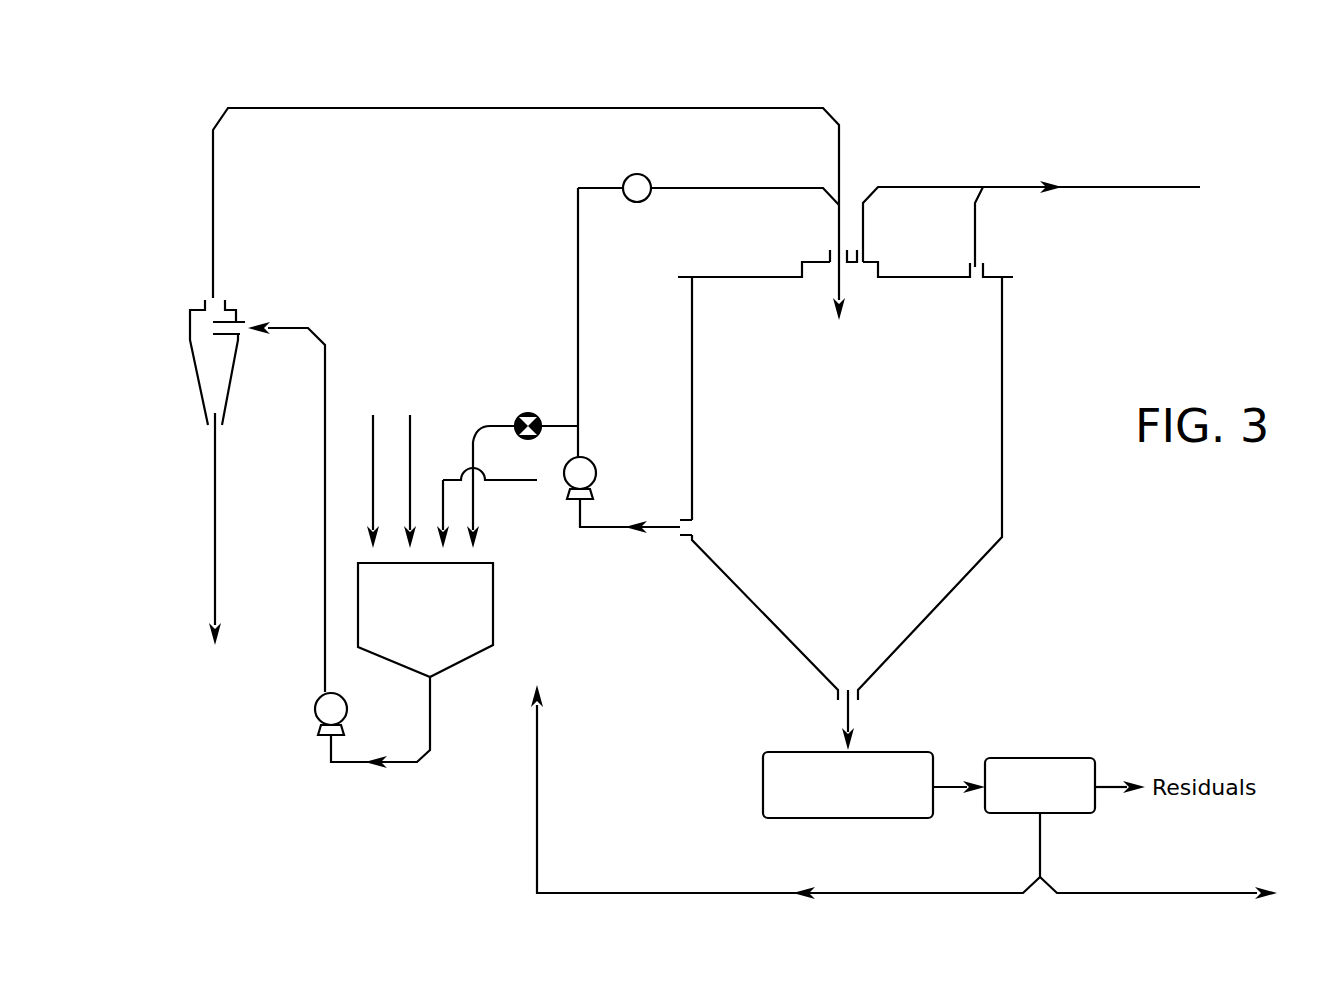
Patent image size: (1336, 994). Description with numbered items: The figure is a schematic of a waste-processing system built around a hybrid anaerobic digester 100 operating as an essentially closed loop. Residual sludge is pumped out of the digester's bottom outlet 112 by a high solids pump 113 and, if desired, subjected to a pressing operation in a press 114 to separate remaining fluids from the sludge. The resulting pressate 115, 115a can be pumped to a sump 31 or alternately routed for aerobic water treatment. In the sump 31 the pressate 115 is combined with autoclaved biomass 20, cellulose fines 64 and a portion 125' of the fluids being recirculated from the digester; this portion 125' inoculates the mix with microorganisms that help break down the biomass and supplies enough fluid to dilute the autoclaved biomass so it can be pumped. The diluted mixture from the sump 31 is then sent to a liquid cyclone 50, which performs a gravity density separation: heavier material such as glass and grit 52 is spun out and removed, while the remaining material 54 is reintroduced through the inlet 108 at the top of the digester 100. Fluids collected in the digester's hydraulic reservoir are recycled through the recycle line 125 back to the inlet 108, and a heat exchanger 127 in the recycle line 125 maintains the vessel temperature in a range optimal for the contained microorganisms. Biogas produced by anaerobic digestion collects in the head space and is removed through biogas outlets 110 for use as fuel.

The remaining material 54 is at (470, 90).
The liquid cyclone 50 is at (222, 306).
The glass and grit 52 is at (229, 529).
The cellulose fines 64 is at (364, 467).
The autoclaved biomass 20 is at (412, 467).
The sump 31 is at (444, 632).
The portion of recirculated fluids 125' is at (525, 411).
The recycle line 125 is at (622, 360).
The heat exchanger 127 is at (638, 174).
The inlet 108 is at (836, 255).
The biogas outlets 110 is at (866, 250).
The hybrid anaerobic digester 100 is at (862, 459).
The outlet 112 is at (860, 700).
The high solids pump 113 is at (869, 801).
The press 114 is at (1061, 801).
The pressate 115 is at (741, 700).
The pressate 115a is at (1164, 905).